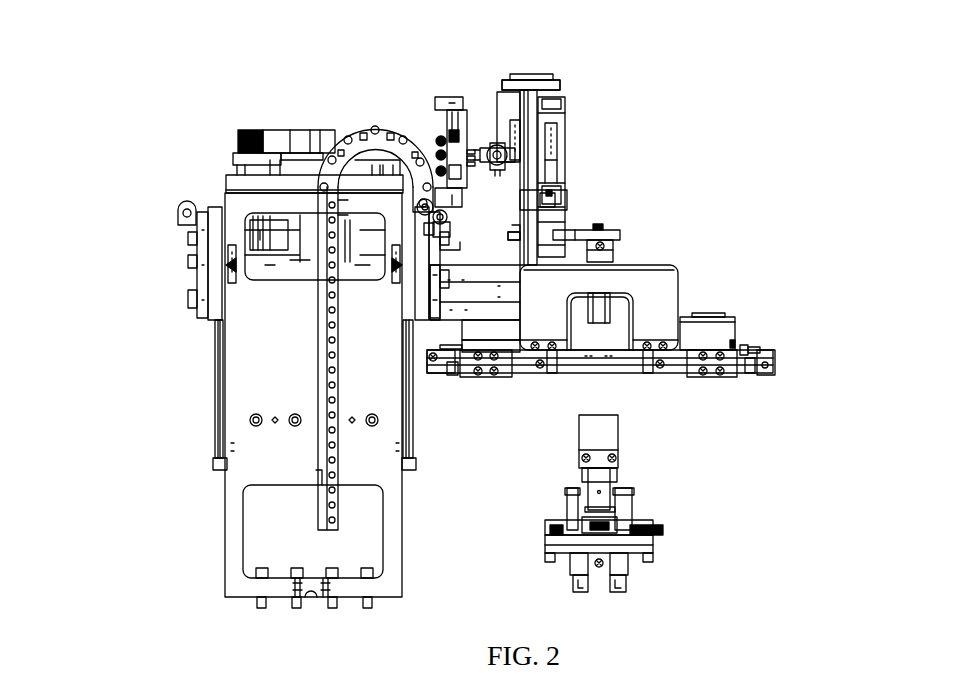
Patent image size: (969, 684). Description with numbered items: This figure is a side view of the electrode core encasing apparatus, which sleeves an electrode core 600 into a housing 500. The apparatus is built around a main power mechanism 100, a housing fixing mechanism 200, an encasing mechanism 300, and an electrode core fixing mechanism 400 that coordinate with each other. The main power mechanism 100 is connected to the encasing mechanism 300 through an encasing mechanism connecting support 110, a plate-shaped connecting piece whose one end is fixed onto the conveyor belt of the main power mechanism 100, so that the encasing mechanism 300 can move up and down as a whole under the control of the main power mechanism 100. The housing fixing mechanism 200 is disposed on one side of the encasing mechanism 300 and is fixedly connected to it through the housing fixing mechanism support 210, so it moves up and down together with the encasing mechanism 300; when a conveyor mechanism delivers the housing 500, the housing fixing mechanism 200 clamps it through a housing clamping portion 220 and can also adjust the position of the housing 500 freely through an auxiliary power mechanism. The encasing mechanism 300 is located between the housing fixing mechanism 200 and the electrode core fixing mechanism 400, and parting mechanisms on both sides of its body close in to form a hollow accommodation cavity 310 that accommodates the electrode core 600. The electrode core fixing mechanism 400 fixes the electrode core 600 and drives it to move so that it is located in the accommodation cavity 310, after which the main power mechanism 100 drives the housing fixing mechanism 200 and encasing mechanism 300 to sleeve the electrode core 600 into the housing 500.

The main power mechanism 100 is at (273, 243).
The encasing mechanism connecting support 110 is at (450, 308).
The housing fixing mechanism 200 is at (545, 108).
The housing fixing mechanism support 210 is at (527, 103).
The housing clamping portion 220 is at (605, 227).
The encasing mechanism 300 is at (723, 355).
The accommodation cavity 310 is at (612, 355).
The electrode core fixing mechanism 400 is at (610, 537).
The housing 500 is at (613, 260).
The electrode core 600 is at (608, 435).